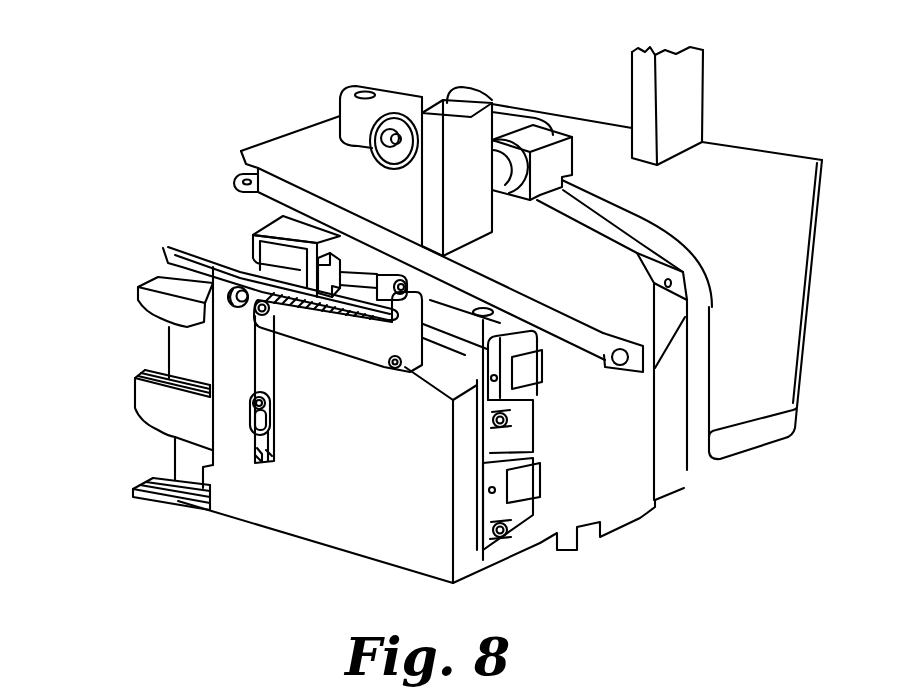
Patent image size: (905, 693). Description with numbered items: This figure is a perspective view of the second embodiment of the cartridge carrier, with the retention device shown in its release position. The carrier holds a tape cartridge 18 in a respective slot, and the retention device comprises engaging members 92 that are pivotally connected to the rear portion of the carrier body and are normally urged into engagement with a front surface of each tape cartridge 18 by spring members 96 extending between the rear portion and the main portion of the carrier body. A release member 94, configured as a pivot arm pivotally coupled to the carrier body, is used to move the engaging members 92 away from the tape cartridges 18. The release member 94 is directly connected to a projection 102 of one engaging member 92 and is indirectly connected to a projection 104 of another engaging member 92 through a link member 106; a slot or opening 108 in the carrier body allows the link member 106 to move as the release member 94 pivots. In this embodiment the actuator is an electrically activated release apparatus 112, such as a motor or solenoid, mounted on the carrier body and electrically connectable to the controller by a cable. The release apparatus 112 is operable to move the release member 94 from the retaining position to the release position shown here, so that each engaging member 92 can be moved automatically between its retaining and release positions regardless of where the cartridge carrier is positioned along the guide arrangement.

The tape cartridge 18 is at (167, 355).
The engaging member 92 is at (163, 250).
The release member 94 is at (341, 340).
The spring member 96 is at (512, 516).
The projection 102 is at (253, 313).
The projection 104 is at (252, 410).
The link member 106 is at (253, 370).
The slot or opening 108 is at (268, 460).
The electrically activated release apparatus 112 is at (256, 236).